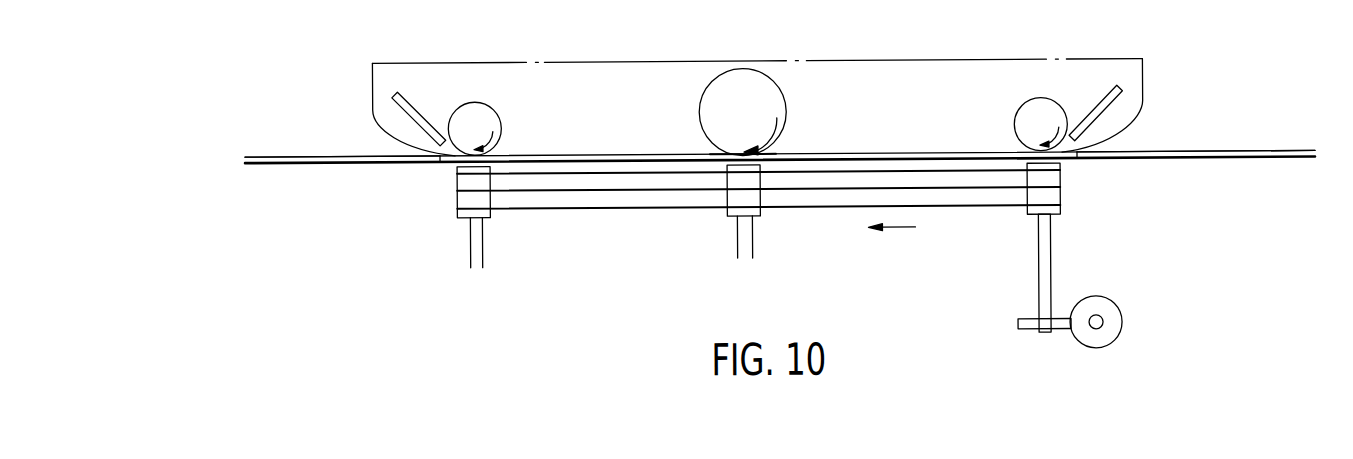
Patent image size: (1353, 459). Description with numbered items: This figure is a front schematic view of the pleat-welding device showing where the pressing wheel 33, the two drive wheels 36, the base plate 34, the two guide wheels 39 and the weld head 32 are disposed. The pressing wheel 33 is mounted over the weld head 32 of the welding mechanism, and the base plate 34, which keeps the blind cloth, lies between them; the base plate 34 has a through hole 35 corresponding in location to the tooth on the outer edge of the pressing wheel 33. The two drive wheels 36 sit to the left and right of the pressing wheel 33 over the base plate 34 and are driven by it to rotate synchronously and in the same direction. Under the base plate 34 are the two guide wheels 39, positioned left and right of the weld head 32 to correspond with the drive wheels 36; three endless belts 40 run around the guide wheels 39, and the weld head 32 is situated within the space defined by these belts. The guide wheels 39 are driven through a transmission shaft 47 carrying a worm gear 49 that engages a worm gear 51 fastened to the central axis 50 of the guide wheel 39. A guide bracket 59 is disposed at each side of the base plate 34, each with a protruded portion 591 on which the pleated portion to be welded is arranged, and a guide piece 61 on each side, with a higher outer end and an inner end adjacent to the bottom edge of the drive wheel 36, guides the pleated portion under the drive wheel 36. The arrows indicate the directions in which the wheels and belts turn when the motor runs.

The weld head 32 is at (738, 198).
The pressing wheel 33 is at (743, 95).
The base plate 34 is at (862, 157).
The through hole 35 is at (768, 155).
The drive wheels 36 is at (475, 108).
The guide wheels 39 is at (470, 177).
The endless belts 40 is at (575, 206).
The transmission shaft 47 is at (1090, 327).
The worm gear 49 is at (1108, 334).
The central axis 50 is at (1045, 255).
The worm gear 51 is at (1037, 322).
The guide bracket 59 is at (302, 162).
The guide piece 61 is at (397, 100).
The protruded portion 591 is at (290, 152).